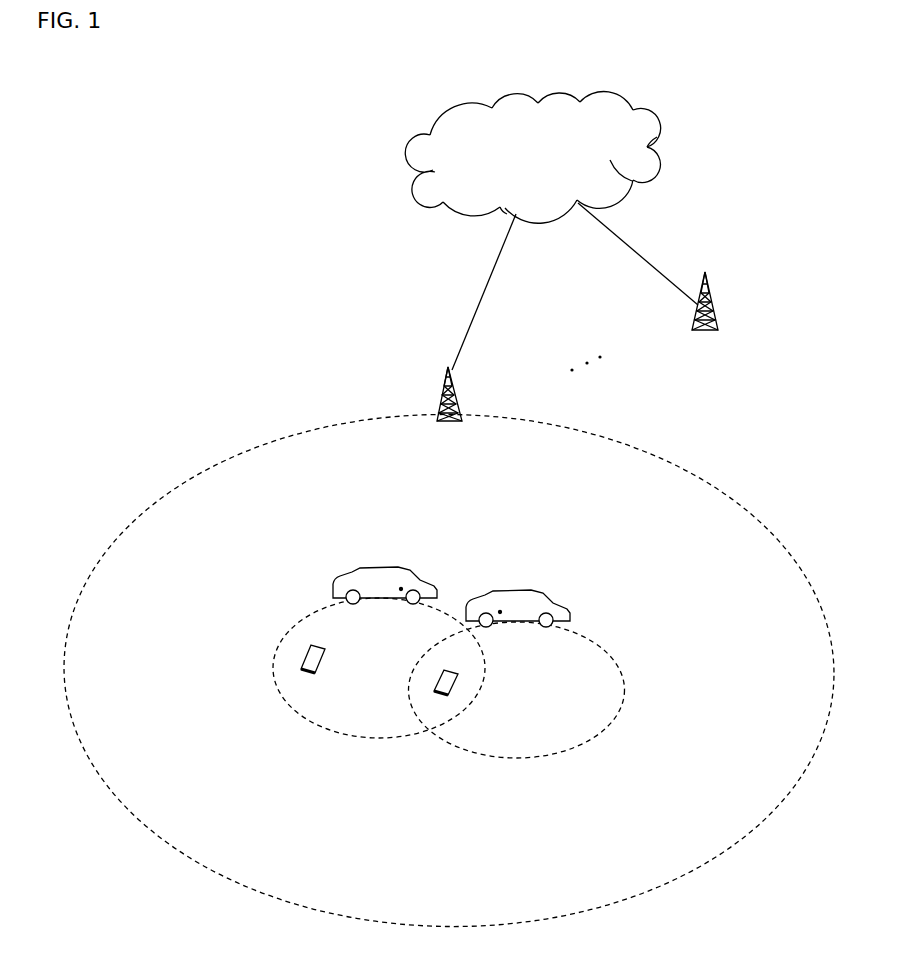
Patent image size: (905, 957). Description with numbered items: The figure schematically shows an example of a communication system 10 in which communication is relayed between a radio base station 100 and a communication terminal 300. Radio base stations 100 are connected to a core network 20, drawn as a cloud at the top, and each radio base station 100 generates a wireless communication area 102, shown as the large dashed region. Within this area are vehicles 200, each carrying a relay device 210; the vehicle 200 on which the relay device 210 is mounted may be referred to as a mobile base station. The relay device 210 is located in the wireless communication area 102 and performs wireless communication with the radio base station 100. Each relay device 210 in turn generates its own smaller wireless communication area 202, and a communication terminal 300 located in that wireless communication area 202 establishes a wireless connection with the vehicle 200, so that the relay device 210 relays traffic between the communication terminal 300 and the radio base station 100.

The communication system 10 is at (198, 74).
The core network 20 is at (651, 115).
The radio base station 100 is at (463, 386).
The wireless communication area 102 is at (738, 500).
The vehicle 200 is at (352, 574).
The wireless communication area 202 is at (449, 694).
The relay device 210 is at (399, 589).
The communication terminal 300 is at (327, 651).